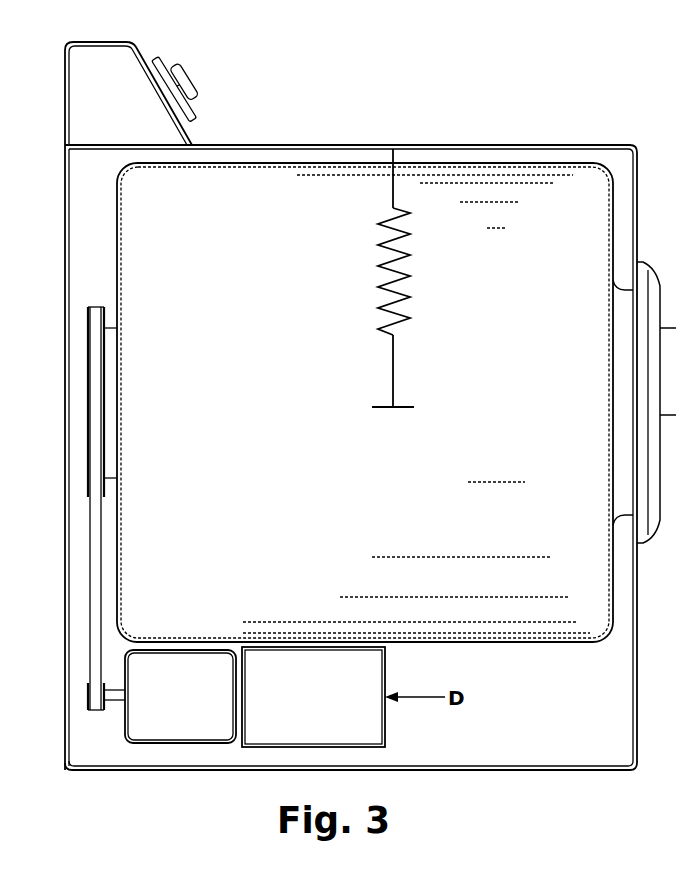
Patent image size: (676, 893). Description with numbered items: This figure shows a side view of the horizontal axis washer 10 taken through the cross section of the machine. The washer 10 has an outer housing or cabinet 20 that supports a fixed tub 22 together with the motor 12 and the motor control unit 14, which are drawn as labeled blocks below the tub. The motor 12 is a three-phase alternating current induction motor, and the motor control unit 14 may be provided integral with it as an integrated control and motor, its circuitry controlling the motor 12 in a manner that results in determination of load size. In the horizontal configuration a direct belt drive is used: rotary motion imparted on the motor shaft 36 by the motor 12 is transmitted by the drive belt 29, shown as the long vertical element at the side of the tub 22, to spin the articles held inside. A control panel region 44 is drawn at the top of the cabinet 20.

The washer 10 is at (315, 92).
The motor 12 is at (166, 722).
The motor control unit 14 is at (298, 722).
The cabinet 20 is at (65, 425).
The fixed tub 22 is at (495, 643).
The drive belt 29 is at (97, 371).
The motor shaft 36 is at (115, 700).
The control panel 44 is at (128, 114).